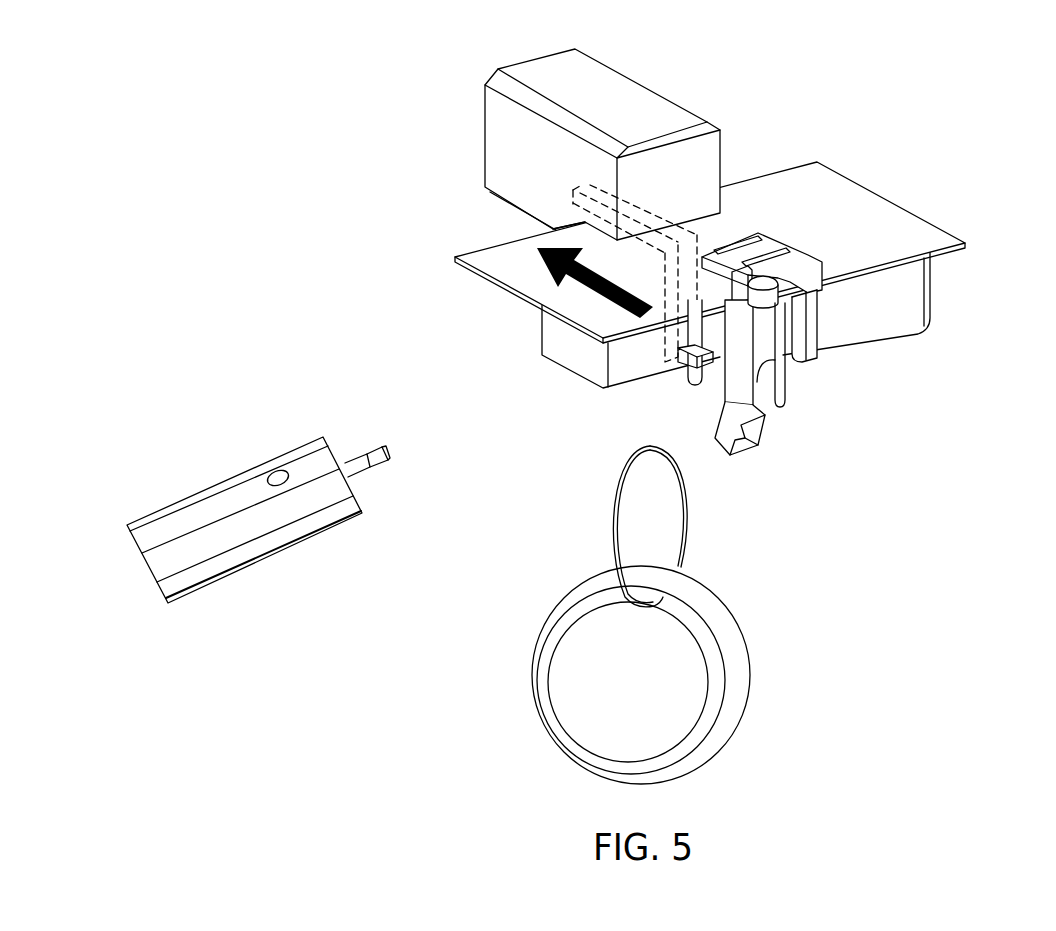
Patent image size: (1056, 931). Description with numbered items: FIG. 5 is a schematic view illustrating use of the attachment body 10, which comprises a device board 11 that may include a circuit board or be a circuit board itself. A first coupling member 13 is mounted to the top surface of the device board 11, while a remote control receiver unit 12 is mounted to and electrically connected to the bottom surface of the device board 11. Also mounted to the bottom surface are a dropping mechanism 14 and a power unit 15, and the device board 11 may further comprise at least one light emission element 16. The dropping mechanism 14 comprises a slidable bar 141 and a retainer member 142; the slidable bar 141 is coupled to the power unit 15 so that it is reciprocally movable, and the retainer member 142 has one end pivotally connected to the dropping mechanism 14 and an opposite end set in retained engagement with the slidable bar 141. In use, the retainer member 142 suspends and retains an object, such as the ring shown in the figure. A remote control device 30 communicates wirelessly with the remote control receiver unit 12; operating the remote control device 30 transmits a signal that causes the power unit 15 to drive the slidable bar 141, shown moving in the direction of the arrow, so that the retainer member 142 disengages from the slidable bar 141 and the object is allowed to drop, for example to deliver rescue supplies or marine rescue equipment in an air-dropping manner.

The attachment body 10 is at (965, 175).
The device board 11 is at (848, 190).
The remote control receiver unit 12 is at (912, 302).
The first coupling member 13 is at (789, 257).
The dropping mechanism 14 is at (743, 373).
The slidable bar 141 is at (603, 205).
The retainer member 142 is at (758, 423).
The power unit 15 is at (517, 137).
The light emission element 16 is at (555, 343).
The remote control device 30 is at (228, 500).